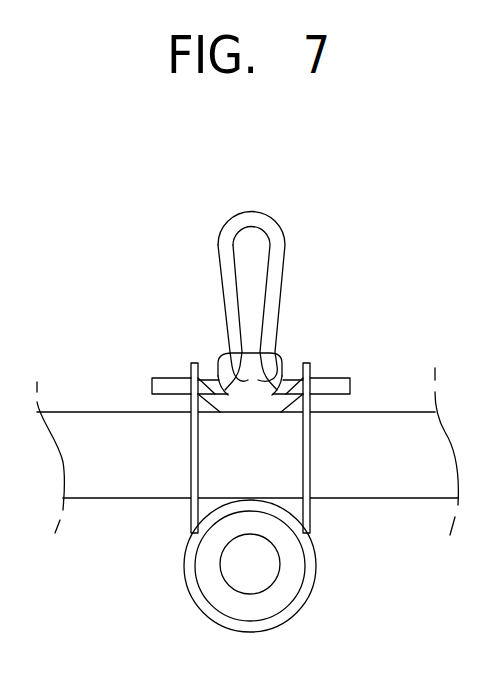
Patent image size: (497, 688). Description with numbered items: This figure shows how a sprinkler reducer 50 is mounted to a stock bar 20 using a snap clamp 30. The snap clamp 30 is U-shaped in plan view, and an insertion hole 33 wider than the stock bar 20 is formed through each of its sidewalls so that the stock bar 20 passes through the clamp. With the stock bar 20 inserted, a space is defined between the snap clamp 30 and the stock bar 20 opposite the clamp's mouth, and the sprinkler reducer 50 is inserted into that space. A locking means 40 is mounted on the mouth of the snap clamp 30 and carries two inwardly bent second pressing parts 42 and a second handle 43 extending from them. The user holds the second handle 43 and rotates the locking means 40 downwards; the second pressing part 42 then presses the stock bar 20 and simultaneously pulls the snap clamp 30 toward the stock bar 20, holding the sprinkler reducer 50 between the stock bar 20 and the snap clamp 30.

The stock bar 20 is at (98, 412).
The snap clamp 30 is at (193, 468).
The insertion hole 33 is at (350, 378).
The locking means 40 is at (286, 242).
The second pressing part 42 is at (240, 385).
The second handle 43 is at (252, 212).
The sprinkler reducer 50 is at (315, 574).